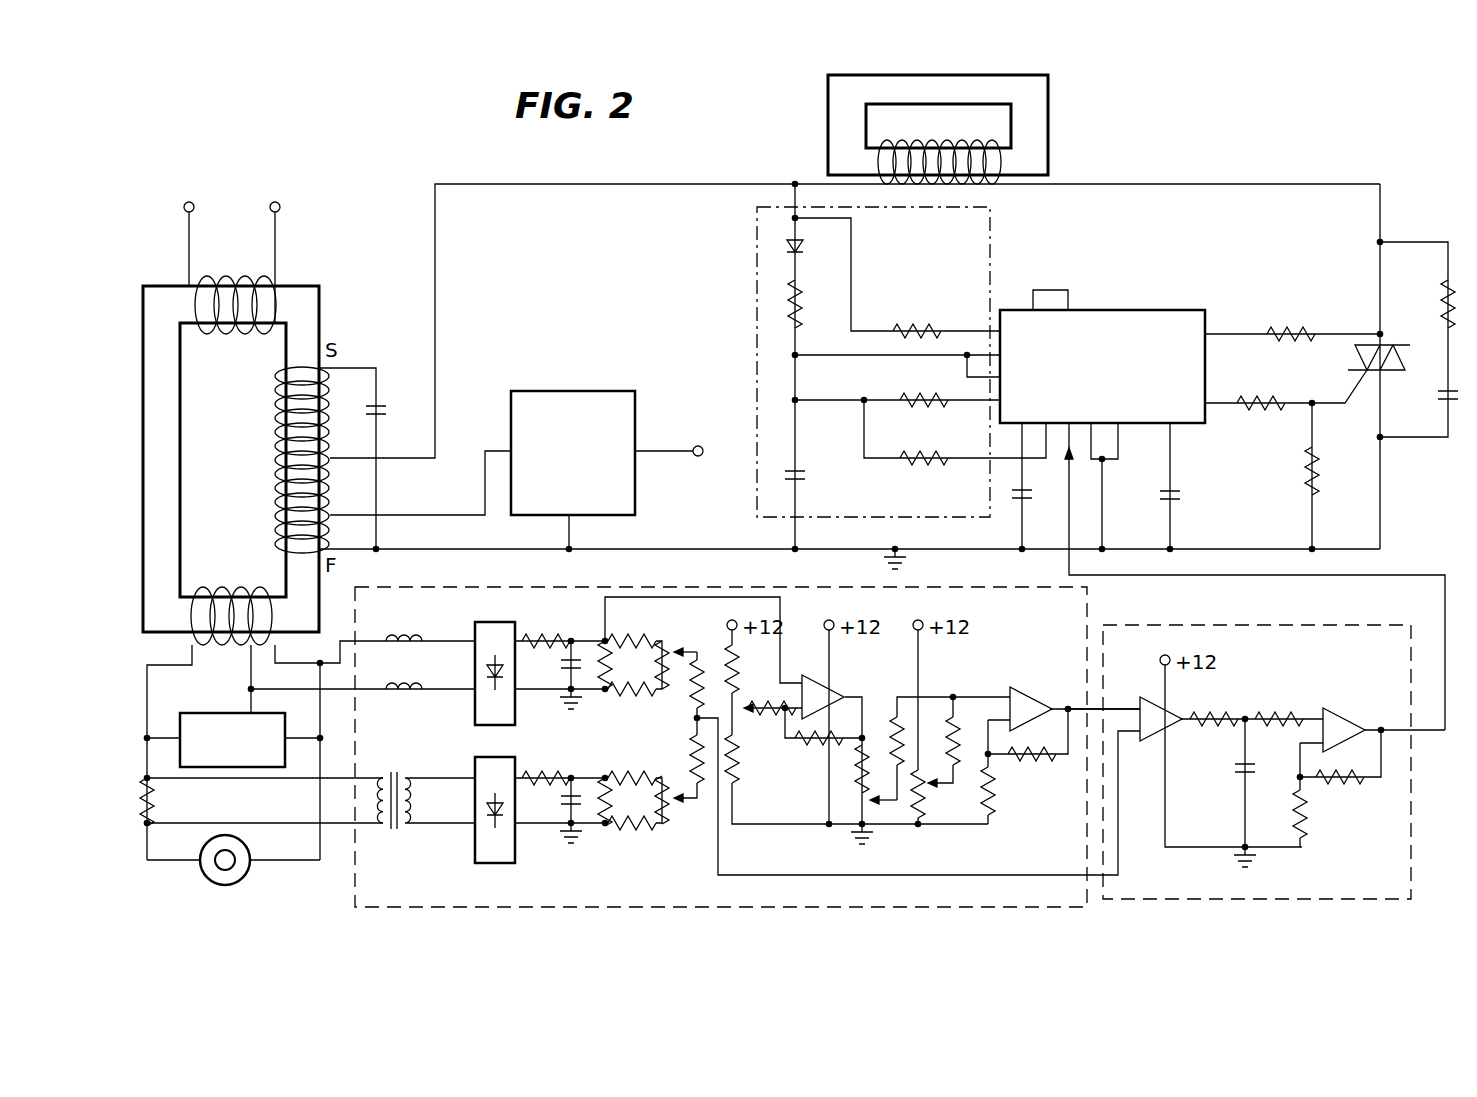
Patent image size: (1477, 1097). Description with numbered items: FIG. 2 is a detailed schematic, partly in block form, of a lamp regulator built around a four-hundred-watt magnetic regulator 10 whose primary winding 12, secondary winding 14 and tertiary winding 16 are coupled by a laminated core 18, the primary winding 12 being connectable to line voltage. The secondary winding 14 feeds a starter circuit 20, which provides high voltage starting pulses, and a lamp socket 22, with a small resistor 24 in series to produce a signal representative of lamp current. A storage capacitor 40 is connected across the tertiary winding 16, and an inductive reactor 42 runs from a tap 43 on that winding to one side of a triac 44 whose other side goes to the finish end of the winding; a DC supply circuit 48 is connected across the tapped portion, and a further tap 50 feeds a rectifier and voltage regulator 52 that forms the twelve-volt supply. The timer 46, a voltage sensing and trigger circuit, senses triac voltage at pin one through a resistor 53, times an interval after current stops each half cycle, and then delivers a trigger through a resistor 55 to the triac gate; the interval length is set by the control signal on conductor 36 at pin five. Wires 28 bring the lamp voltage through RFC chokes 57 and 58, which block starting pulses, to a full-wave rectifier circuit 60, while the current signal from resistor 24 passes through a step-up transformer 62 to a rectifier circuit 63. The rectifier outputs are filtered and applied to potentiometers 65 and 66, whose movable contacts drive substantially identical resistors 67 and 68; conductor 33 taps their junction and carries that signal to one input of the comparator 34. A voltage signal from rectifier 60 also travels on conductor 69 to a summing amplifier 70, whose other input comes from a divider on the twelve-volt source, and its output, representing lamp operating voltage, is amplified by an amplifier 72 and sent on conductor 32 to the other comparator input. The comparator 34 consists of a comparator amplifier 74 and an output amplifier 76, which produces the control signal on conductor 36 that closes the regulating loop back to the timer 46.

The magnetic regulator 10 is at (165, 262).
The primary winding 12 is at (218, 276).
The secondary winding 14 is at (238, 585).
The tertiary winding 16 is at (273, 420).
The laminated core 18 is at (181, 412).
The starter circuit 20 is at (198, 713).
The lamp socket 22 is at (202, 878).
The resistor 24 is at (155, 802).
The wires 28 is at (251, 676).
The conductor 32 is at (1094, 709).
The conductor 33 is at (1012, 907).
The comparator circuit 34 is at (1342, 899).
The conductor 36 is at (1420, 575).
The storage capacitor 40 is at (378, 410).
The inductive reactor 42 is at (1056, 140).
The tap 43 is at (332, 458).
The triac 44 is at (1400, 345).
The timer circuit 46 is at (1138, 310).
The DC supply circuit 48 is at (757, 290).
The tap 50 is at (332, 515).
The rectifier and voltage regulator 52 is at (575, 391).
The resistor 53 is at (1285, 334).
The resistor 55 is at (1272, 408).
The RFC choke 57 is at (406, 636).
The RFC choke 58 is at (408, 694).
The full-wave rectifier circuit 60 is at (505, 622).
The coupling step-up transformer 62 is at (391, 778).
The rectifier circuit 63 is at (475, 850).
The potentiometer 65 is at (670, 650).
The potentiometer 66 is at (666, 815).
The resistor 67 is at (690, 688).
The resistor 68 is at (692, 750).
The conductor 69 is at (676, 597).
The summing amplifier 70 is at (832, 688).
The amplifier 72 is at (1028, 697).
The comparator amplifier 74 is at (1170, 728).
The output amplifier 76 is at (1358, 706).